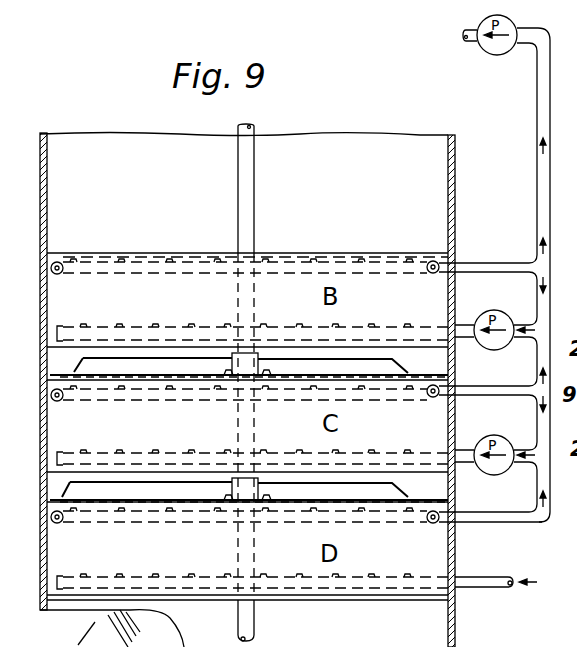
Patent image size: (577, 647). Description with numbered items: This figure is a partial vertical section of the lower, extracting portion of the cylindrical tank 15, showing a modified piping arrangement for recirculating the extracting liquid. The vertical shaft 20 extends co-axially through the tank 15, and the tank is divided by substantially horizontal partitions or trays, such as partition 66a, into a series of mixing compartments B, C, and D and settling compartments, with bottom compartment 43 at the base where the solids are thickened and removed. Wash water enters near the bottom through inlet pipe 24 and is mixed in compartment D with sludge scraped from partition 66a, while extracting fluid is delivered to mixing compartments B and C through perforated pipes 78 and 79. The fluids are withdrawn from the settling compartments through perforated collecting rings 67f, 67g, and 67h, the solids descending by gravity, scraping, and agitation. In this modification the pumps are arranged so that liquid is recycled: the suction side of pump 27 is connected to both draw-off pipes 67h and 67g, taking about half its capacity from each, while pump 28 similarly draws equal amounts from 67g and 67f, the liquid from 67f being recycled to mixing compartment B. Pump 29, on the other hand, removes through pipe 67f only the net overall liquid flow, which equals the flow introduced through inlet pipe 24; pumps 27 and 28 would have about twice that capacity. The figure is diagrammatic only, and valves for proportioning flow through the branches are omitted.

The cylindrical tank 15 is at (456, 182).
The vertical shaft 20 is at (255, 182).
The partition 66a is at (107, 250).
The perforated collecting ring 67f is at (430, 273).
The perforated collecting ring 67g is at (430, 397).
The perforated collecting ring 67h is at (430, 523).
The perforated pipe 78 is at (466, 322).
The perforated pipe 79 is at (466, 447).
The pump 28 is at (508, 346).
The pump 27 is at (510, 472).
The pump 29 is at (503, 57).
The inlet pipe 24 is at (483, 576).
The bottom compartment 43 is at (148, 628).